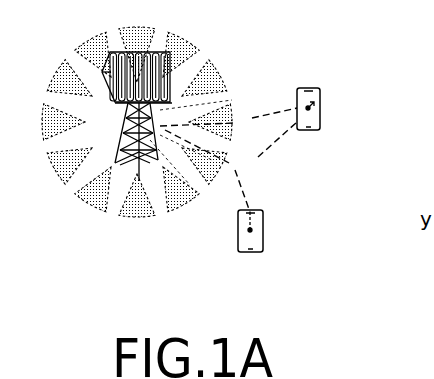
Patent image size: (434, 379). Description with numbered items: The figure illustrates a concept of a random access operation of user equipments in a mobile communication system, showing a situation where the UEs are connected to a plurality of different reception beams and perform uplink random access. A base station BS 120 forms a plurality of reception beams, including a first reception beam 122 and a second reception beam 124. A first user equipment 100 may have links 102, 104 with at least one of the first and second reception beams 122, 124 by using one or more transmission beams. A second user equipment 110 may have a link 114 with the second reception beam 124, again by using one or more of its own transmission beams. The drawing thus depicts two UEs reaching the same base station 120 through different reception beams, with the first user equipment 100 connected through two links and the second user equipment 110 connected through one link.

The UE#1 100 is at (320, 108).
The UE#2 110 is at (263, 230).
The BS 120 is at (134, 130).
The reception beam B#1 122 is at (237, 97).
The link 102 is at (275, 110).
The reception beam B#2 124 is at (222, 170).
The link 104 is at (260, 157).
The link 114 is at (245, 190).